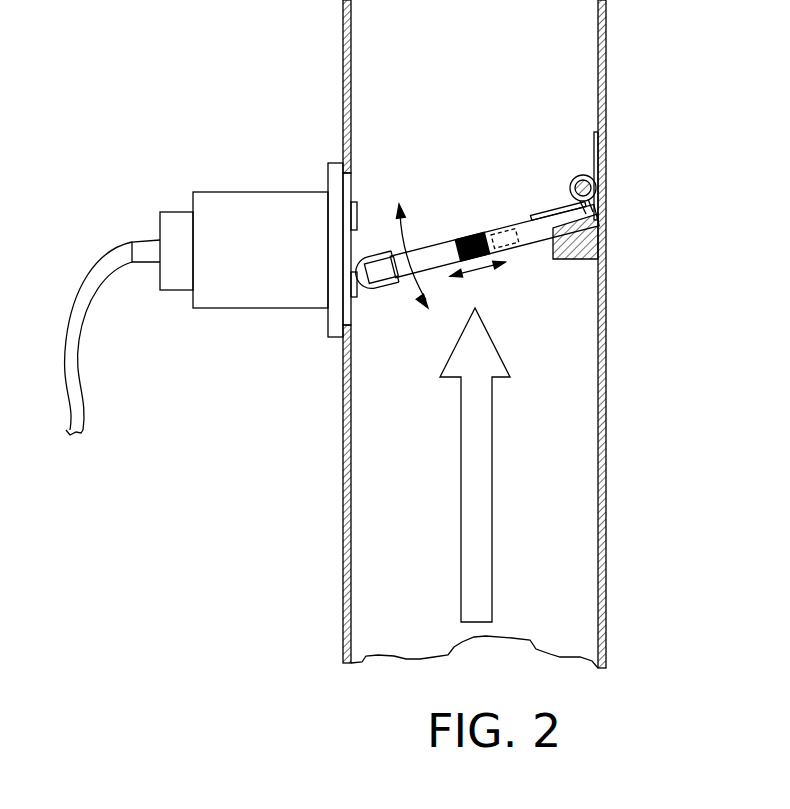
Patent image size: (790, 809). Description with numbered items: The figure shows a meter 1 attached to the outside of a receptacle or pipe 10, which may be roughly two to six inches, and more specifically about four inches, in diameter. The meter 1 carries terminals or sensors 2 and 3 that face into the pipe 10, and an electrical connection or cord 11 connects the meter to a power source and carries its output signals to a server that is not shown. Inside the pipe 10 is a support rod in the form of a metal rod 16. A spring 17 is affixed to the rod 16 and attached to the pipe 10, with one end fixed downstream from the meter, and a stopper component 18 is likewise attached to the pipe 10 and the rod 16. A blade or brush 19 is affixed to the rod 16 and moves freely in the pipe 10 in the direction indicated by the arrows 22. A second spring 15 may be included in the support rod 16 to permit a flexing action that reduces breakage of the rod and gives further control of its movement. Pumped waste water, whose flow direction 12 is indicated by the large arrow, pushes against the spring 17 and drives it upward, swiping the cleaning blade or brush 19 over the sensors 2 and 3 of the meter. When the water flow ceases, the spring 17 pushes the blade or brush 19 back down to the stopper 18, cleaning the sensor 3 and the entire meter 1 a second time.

The meter 1 is at (237, 310).
The sensor 2 is at (353, 216).
The sensor 3 is at (368, 282).
The pipe 10 is at (606, 355).
The electrical connection or cord 11 is at (83, 372).
The waste water flow direction 12 is at (492, 488).
The second spring 15 is at (461, 240).
The support rod 16 is at (600, 214).
The spring 17 is at (598, 188).
The stopper component 18 is at (585, 262).
The blade or brush 19 is at (373, 298).
The arrows 22 is at (400, 240).